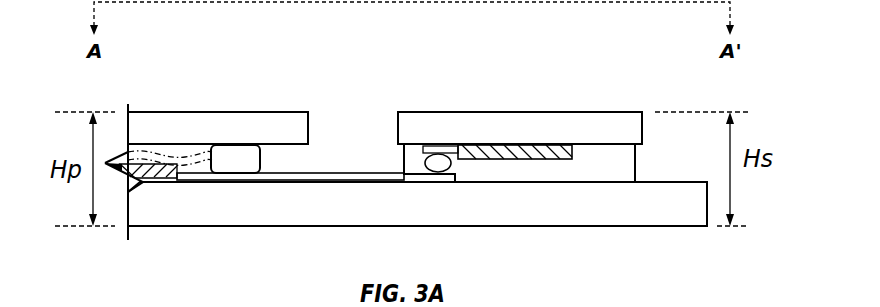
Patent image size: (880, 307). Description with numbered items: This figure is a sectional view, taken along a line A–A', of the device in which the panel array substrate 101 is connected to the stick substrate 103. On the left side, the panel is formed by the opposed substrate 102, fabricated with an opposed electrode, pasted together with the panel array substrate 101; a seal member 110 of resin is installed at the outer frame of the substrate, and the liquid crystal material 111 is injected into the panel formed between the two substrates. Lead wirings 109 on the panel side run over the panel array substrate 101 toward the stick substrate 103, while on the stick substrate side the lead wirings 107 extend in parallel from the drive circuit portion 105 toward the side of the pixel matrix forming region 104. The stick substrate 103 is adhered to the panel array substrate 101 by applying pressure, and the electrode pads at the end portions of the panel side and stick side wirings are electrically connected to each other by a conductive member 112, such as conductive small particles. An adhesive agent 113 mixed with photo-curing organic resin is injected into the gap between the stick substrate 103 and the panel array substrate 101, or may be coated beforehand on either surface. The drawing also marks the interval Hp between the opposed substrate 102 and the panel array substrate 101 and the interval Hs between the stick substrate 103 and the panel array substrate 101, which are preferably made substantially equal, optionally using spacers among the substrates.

The panel array substrate 101 is at (618, 210).
The opposed substrate 102 is at (203, 133).
The stick substrate 103 is at (620, 118).
The pixel matrix forming region 104 is at (157, 173).
The drive circuit portion 105 is at (525, 150).
The lead wirings 107 is at (443, 150).
The lead wirings 109 is at (343, 175).
The seal member 110 is at (235, 160).
The liquid crystal material 111 is at (197, 158).
The conductive member 112 is at (440, 168).
The adhesive agent 113 is at (500, 173).